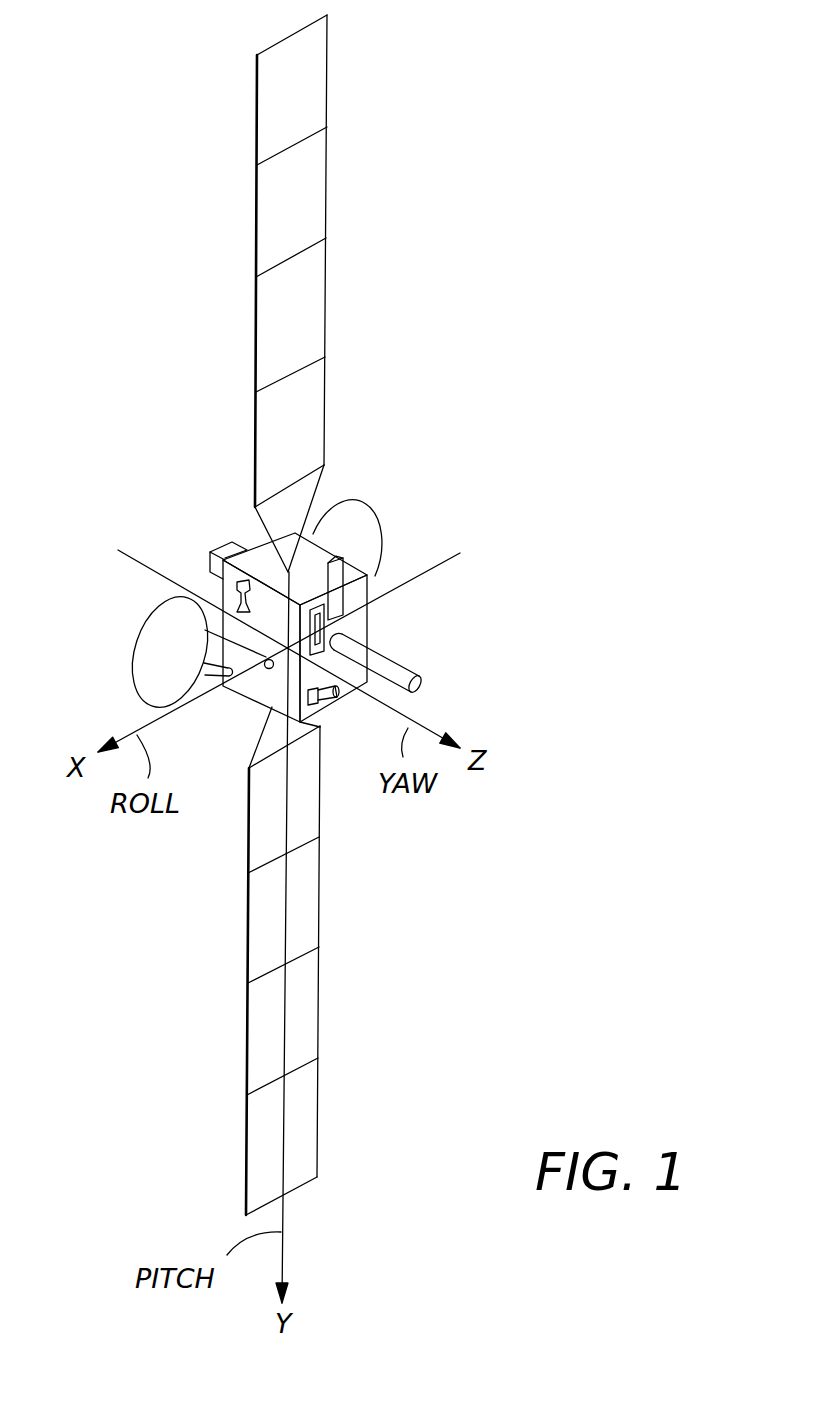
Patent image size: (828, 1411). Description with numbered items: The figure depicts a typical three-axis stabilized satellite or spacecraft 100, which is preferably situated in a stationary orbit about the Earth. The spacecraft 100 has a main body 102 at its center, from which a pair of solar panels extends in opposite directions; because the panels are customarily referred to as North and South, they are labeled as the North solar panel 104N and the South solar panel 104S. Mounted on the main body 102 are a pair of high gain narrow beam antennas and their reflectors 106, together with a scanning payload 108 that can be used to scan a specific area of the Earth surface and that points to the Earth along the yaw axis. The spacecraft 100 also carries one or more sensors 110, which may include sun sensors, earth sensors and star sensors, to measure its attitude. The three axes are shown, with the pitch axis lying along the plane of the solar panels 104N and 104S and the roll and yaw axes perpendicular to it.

The spacecraft 100 is at (408, 247).
The main body 102 is at (360, 627).
The North solar panel 104N is at (305, 197).
The South solar panel 104S is at (308, 1005).
The high gain narrow beam antennas and reflectors 106 is at (160, 637).
The scanning payload 108 is at (402, 664).
The sensors 110 is at (240, 560).